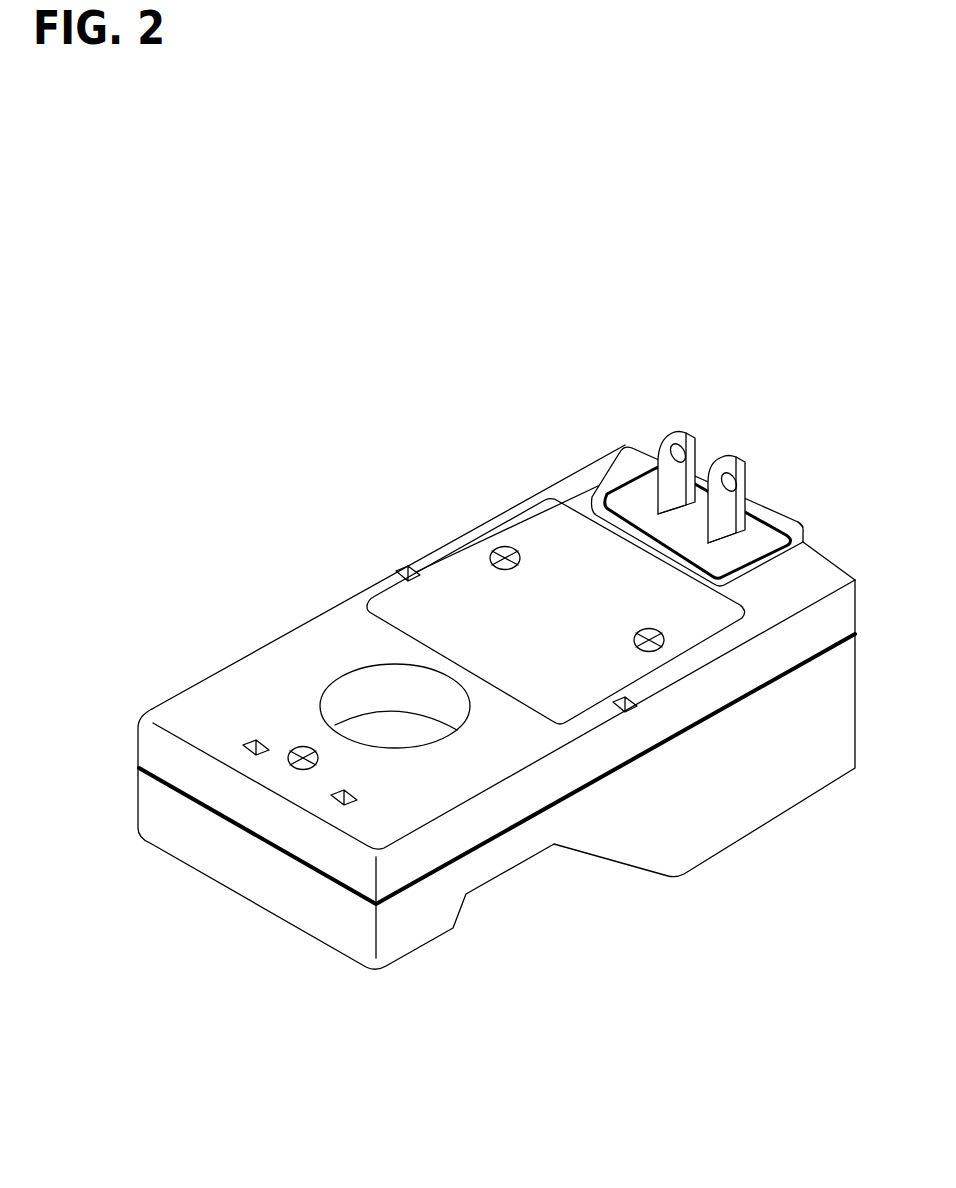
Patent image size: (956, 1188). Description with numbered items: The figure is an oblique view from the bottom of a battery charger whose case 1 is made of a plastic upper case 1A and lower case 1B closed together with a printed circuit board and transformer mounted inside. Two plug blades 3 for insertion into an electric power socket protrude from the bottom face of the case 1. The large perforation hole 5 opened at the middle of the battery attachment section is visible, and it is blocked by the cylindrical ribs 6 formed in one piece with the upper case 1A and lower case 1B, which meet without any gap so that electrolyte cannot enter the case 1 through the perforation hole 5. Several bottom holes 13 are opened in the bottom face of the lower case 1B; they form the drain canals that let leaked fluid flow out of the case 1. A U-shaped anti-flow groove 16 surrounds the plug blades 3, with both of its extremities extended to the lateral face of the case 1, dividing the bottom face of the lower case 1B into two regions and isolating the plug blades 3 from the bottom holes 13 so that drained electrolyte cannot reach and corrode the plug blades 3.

The case 1 is at (866, 642).
The upper case 1A is at (772, 791).
The lower case 1B is at (285, 645).
The plug blades 3 is at (733, 498).
The perforation hole 5 is at (344, 706).
The cylindrical ribs 6 is at (370, 680).
The bottom holes 13 is at (401, 569).
The anti-flow groove 16 is at (604, 496).